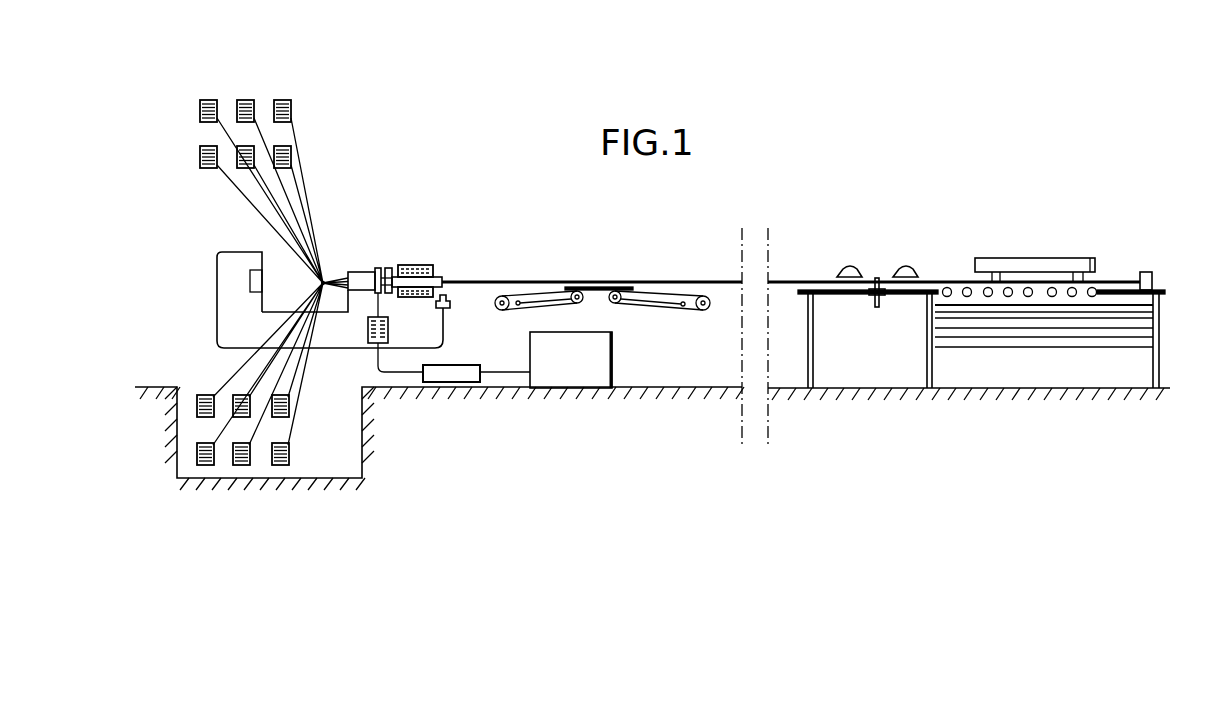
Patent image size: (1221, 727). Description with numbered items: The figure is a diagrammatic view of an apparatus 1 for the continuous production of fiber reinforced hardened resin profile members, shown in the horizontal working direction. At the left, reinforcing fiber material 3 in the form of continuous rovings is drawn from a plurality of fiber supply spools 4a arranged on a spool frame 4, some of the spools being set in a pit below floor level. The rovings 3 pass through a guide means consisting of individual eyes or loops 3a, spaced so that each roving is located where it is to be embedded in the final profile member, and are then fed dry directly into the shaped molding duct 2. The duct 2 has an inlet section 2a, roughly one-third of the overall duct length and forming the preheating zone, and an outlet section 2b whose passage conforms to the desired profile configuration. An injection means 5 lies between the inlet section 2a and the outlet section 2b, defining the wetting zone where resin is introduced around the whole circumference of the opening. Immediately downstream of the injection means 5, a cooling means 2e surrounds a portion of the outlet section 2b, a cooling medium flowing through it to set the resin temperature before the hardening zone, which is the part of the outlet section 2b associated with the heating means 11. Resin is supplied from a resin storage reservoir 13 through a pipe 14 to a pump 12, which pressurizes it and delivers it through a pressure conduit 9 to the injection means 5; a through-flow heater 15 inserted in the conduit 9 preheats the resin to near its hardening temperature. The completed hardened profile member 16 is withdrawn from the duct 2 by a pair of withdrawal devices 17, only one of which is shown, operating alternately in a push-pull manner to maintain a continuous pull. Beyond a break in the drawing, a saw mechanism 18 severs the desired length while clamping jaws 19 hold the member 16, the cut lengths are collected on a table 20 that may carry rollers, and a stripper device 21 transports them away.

The apparatus 1 is at (513, 212).
The shaped molding duct 2 is at (400, 188).
The inlet section 2a is at (363, 276).
The outlet section 2b is at (432, 283).
The cooling means 2e is at (389, 268).
The reinforcing fiber material 3 is at (290, 197).
The eyes or loops 3a is at (328, 277).
The spool frame 4 is at (245, 90).
The fiber supply spools 4a is at (272, 466).
The injection means 5 is at (378, 268).
The pressure conduit 9 is at (403, 373).
The heating means 11 is at (423, 263).
The pump 12 is at (460, 368).
The resin storage reservoir 13 is at (598, 356).
The pipe 14 is at (505, 373).
The through-flow heater 15 is at (372, 343).
The profile member 16 is at (528, 280).
The withdrawal devices 17 is at (659, 290).
The saw mechanism 18 is at (877, 278).
The clamping jaws 19 is at (840, 268).
The table 20 is at (1083, 290).
The stripper device 21 is at (1003, 260).